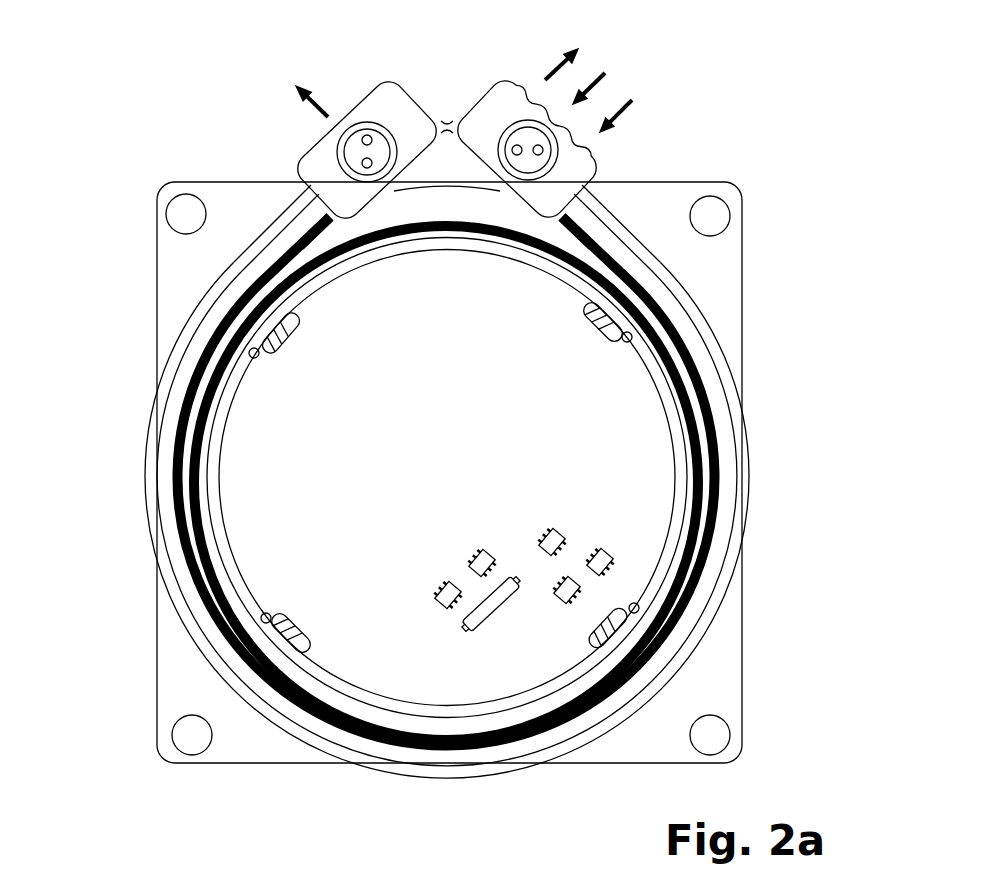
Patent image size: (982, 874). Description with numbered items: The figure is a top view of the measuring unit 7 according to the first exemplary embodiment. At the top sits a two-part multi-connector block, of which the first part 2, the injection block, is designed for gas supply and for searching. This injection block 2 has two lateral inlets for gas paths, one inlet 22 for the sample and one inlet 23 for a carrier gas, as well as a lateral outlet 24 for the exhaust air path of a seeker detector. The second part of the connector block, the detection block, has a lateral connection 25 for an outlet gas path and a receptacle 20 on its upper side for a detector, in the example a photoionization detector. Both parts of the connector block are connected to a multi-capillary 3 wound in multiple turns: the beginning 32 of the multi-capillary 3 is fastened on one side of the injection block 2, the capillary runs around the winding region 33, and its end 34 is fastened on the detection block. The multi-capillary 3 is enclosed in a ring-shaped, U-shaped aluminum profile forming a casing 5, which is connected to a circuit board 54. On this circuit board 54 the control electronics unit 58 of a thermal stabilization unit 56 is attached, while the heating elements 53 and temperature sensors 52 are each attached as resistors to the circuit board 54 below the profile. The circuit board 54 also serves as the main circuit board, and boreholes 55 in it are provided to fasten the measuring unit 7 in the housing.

The measuring unit 7 is at (88, 103).
The first part of the multi-connector block 2 is at (414, 120).
The receptacle for a detector 20 is at (528, 142).
The lateral connection for an outlet gas path 25 is at (377, 155).
The lateral inlet for the sample 22 is at (643, 111).
The lateral inlet for a carrier gas 23 is at (617, 76).
The lateral outlet for an exhaust air path 24 is at (582, 46).
The multi-capillary 3 is at (702, 428).
The beginning of the multi-capillary 32 is at (598, 196).
The winding region 33 is at (207, 350).
The end of the multi-capillary 34 is at (327, 213).
The casing 5 is at (657, 373).
The temperature sensors 52 is at (637, 605).
The heating elements 53 is at (607, 637).
The circuit board 54 is at (167, 692).
The boreholes 55 is at (192, 740).
The thermal stabilization unit 56 is at (808, 678).
The control electronics unit 58 is at (620, 560).